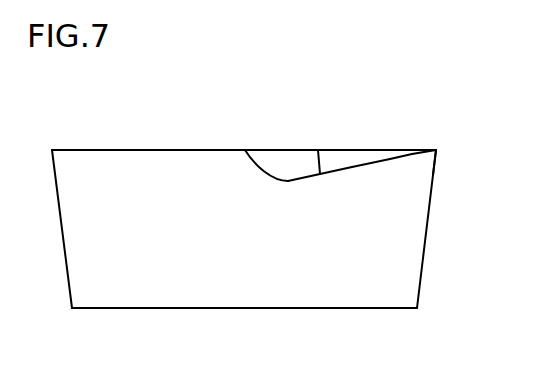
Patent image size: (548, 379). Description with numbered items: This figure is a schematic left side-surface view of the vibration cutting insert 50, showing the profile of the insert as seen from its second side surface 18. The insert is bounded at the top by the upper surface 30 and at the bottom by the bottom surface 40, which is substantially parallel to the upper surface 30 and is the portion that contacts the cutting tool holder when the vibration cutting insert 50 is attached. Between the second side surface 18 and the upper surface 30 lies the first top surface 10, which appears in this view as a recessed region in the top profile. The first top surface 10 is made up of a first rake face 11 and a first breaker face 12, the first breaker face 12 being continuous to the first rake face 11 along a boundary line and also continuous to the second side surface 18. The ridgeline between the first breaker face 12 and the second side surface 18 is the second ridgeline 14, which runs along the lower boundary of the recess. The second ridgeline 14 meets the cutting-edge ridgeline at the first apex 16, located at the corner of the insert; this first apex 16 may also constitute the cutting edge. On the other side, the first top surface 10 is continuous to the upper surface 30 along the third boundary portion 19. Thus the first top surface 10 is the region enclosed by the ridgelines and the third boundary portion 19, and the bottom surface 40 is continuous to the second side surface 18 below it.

The first top surface 10 is at (298, 122).
The first rake face 11 is at (276, 100).
The first breaker face 12 is at (293, 163).
The second ridgeline 14 is at (357, 163).
The first apex 16 is at (431, 148).
The second side surface 18 is at (350, 276).
The third boundary portion 19 is at (395, 148).
The upper surface 30 is at (153, 148).
The bottom surface 40 is at (157, 311).
The vibration cutting insert 50 is at (456, 127).